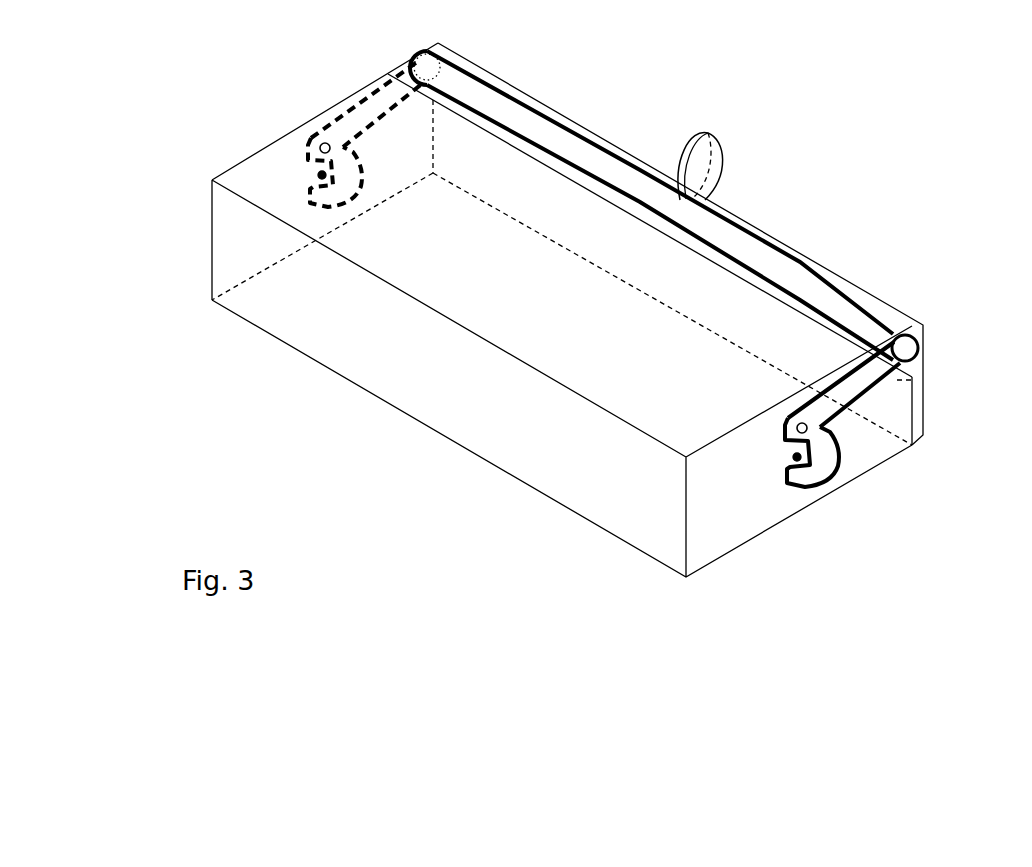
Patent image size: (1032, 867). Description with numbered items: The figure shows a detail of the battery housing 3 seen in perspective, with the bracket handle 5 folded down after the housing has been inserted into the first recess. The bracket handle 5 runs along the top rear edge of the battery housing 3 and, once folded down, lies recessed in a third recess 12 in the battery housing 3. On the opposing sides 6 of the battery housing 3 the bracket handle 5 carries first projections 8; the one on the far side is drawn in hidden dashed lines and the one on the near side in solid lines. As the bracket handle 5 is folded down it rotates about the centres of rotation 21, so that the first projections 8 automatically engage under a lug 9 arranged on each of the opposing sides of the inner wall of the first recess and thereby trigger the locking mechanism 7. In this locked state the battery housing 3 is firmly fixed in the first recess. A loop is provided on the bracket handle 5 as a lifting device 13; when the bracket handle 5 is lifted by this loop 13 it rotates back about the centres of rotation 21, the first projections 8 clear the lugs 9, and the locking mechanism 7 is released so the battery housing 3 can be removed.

The battery housing 3 is at (408, 392).
The bracket handle 5 is at (767, 258).
The opposing sides 6 is at (382, 158).
The locking mechanism 7 is at (262, 118).
The first projections 8 is at (320, 195).
The lug 9 is at (310, 172).
The third recess 12 is at (910, 368).
The lifting device 13 is at (708, 128).
The centres of rotation 21 is at (317, 145).